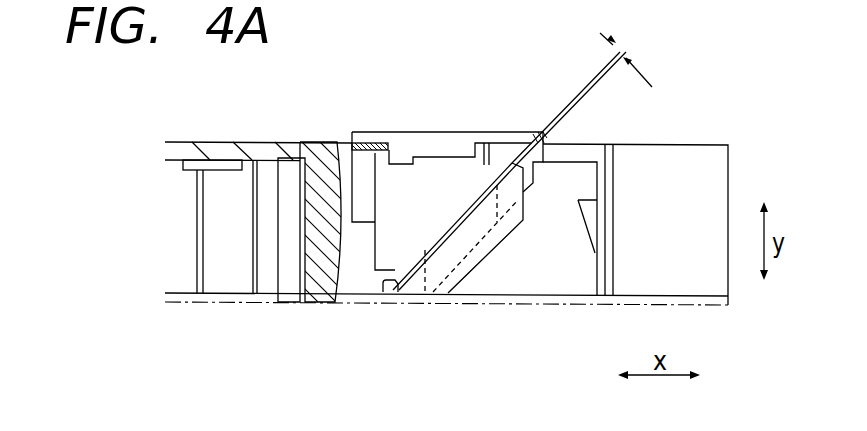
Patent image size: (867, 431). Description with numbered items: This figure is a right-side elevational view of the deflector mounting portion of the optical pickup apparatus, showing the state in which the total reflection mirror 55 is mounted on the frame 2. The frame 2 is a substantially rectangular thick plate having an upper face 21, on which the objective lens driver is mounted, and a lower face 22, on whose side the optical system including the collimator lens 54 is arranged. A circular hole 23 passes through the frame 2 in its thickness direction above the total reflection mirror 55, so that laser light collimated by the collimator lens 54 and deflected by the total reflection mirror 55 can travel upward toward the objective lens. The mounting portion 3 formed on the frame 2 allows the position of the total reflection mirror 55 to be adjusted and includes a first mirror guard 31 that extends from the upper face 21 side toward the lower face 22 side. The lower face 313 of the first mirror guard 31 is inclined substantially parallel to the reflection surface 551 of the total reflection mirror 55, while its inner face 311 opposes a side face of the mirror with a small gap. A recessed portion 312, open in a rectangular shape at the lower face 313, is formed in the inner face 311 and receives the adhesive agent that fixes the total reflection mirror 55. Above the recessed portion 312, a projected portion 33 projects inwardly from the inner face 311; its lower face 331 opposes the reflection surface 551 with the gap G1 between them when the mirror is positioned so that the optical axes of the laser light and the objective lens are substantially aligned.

The frame 2 is at (675, 170).
The mounting portion 3 is at (554, 176).
The upper face 21 is at (341, 139).
The lower face 22 is at (365, 303).
The circular hole 23 is at (412, 142).
The first mirror guard 31 is at (509, 171).
The inner face 311 is at (512, 131).
The recessed portion 312 is at (452, 302).
The lower face 313 is at (523, 230).
The projected portion 33 is at (457, 176).
The lower face 331 is at (447, 178).
The collimator lens 54 is at (293, 281).
The total reflection mirror 55 is at (485, 243).
The reflection surface 551 is at (387, 287).
The gap G1 is at (626, 55).